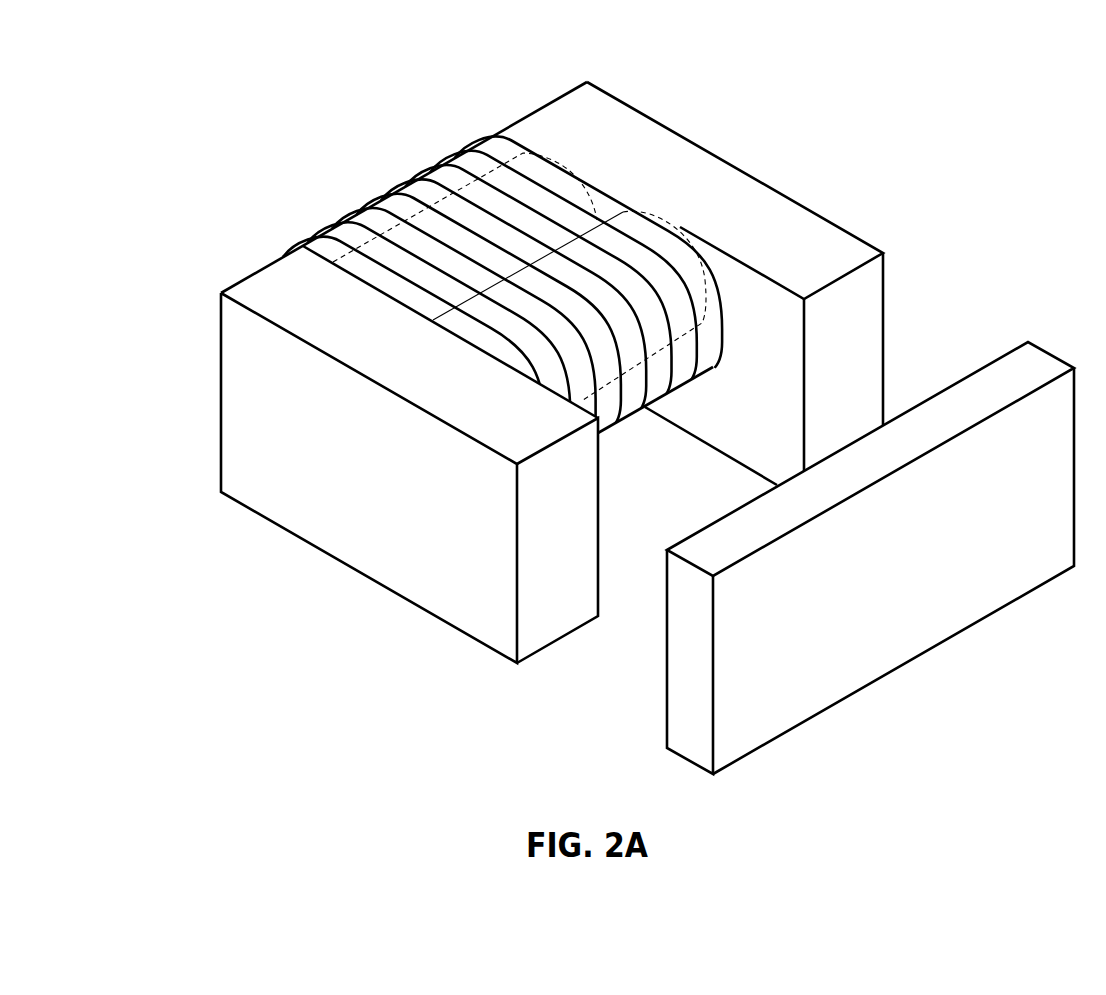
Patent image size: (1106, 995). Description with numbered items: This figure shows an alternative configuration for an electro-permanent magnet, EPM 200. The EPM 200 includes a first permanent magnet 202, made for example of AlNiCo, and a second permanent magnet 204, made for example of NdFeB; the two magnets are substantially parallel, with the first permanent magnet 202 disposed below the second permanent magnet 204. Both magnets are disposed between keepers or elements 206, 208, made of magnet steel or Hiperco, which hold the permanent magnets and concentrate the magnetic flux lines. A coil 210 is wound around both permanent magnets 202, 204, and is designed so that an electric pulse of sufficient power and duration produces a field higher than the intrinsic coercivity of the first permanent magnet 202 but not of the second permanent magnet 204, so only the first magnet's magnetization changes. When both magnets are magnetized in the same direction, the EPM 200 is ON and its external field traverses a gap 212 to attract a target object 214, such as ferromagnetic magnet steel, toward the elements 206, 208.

The EPM 200 is at (616, 406).
The first permanent magnet 202 is at (538, 255).
The second permanent magnet 204 is at (550, 181).
The keeper or element 206 is at (858, 297).
The keeper or element 208 is at (228, 361).
The coil 210 is at (543, 361).
The gap 212 is at (597, 664).
The target object 214 is at (964, 613).